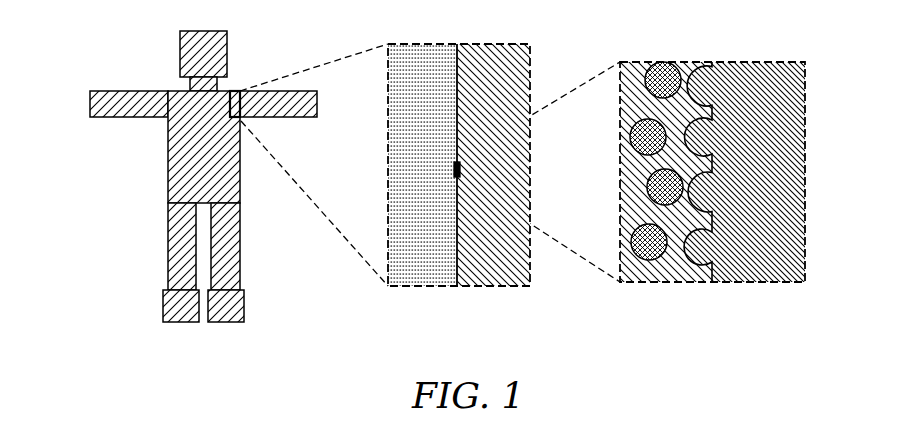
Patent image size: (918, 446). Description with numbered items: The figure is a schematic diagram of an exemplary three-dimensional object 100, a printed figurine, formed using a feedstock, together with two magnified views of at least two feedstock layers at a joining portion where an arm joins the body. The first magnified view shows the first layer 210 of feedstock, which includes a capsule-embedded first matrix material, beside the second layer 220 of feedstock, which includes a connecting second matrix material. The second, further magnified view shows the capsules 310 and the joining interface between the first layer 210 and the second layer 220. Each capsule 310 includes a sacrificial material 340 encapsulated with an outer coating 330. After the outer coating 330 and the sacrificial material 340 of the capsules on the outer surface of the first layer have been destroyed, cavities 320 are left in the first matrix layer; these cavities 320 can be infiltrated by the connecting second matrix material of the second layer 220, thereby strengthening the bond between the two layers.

The three-dimensional object 100 is at (127, 62).
The first layer 210 is at (369, 235).
The second layer 220 is at (533, 298).
The capsules 310 is at (698, 171).
The cavities 320 is at (715, 89).
The outer coating 330 is at (630, 114).
The sacrificial material 340 is at (649, 139).